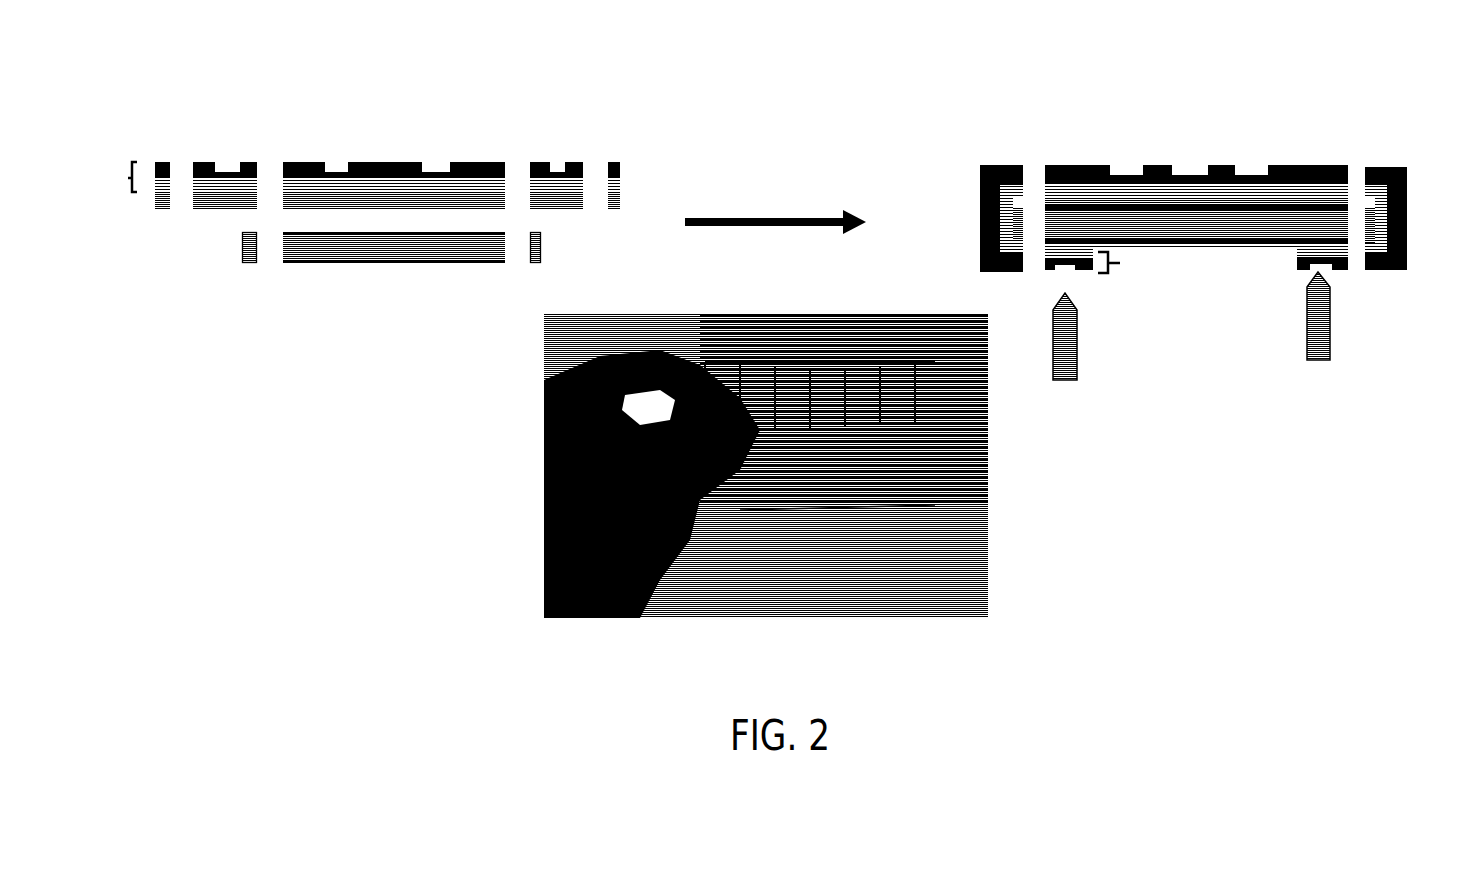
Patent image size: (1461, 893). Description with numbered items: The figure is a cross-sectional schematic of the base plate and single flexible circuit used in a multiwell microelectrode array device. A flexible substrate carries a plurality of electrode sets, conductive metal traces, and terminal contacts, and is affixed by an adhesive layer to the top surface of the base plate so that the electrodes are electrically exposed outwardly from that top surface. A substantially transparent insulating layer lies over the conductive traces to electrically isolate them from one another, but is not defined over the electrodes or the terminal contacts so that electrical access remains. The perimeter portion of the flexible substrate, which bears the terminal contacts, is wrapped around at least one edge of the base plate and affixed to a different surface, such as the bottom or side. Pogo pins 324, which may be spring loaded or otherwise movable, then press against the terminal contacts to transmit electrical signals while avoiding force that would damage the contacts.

The pogo pin 324 is at (1318, 360).